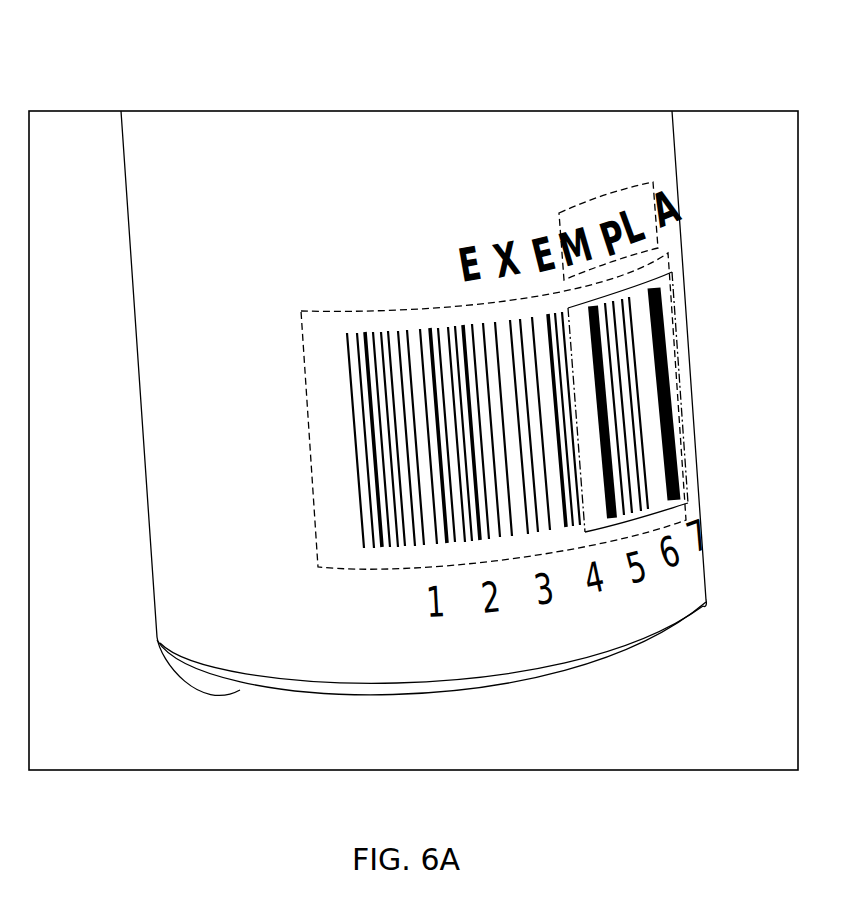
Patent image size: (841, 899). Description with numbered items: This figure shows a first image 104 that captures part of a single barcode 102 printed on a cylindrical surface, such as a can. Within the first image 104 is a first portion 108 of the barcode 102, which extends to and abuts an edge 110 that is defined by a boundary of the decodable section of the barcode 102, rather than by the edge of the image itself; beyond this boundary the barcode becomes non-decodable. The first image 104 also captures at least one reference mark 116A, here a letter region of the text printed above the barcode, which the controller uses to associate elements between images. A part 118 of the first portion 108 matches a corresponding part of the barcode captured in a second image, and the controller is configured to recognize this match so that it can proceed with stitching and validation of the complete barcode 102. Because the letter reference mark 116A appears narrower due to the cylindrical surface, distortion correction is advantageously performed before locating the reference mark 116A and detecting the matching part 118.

The first image 104 is at (133, 51).
The barcode 102 is at (168, 236).
The first portion of the barcode 108 is at (306, 382).
The edge 110 is at (688, 296).
The reference mark 116A is at (580, 210).
The part of the first portion 118 is at (577, 445).